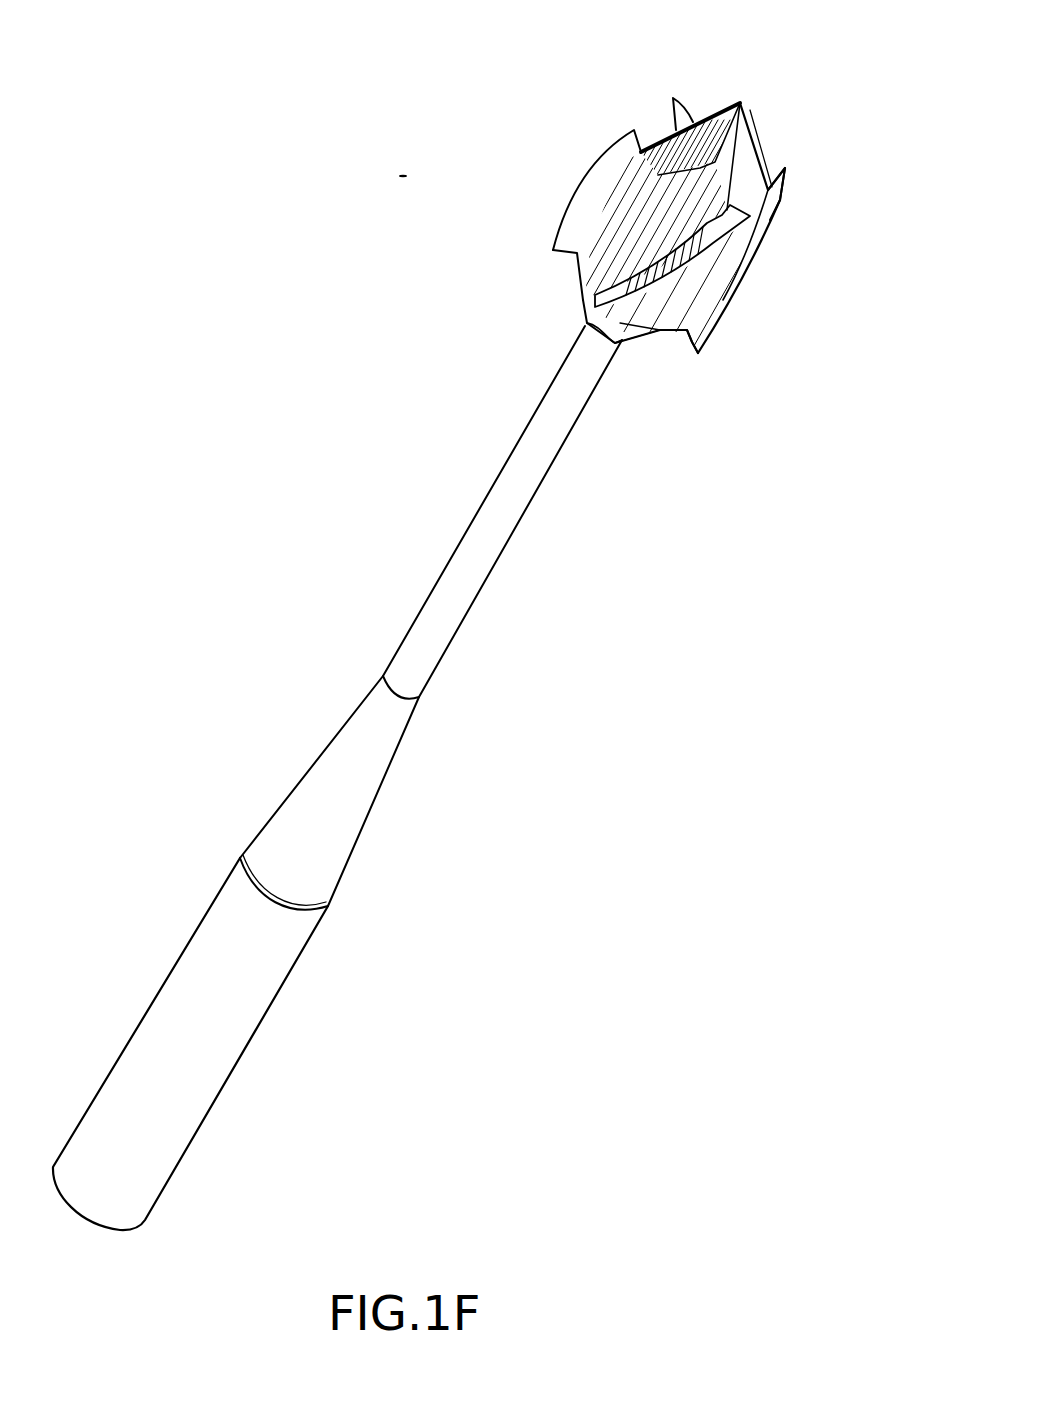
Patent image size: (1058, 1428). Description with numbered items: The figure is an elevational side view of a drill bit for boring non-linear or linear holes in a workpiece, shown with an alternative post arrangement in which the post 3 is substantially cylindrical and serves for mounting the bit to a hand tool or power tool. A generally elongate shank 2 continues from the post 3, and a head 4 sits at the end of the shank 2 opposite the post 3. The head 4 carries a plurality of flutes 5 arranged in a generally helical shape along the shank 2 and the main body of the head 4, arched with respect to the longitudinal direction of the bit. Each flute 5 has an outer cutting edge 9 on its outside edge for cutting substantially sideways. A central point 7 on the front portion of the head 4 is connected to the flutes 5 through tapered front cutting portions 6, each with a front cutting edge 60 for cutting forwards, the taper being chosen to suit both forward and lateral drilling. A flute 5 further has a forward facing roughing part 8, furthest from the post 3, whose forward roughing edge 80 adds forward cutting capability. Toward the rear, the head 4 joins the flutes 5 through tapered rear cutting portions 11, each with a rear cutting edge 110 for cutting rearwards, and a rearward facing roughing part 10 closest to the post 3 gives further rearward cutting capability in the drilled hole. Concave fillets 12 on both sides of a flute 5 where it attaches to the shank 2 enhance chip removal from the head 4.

The shank 2 is at (463, 580).
The post 3 is at (248, 972).
The head 4 is at (790, 258).
The flute 5 is at (743, 238).
The front cutting portion 6 is at (705, 110).
The central point 7 is at (745, 100).
The forward facing roughing part 8 is at (781, 195).
The outer cutting edge 9 is at (567, 210).
The rearward facing roughing part 10 is at (577, 253).
The rear cutting portion 11 is at (655, 337).
The concave fillet 12 is at (677, 230).
The front cutting edge 60 is at (766, 178).
The forward roughing edge 80 is at (676, 98).
The rear cutting edge 110 is at (587, 324).